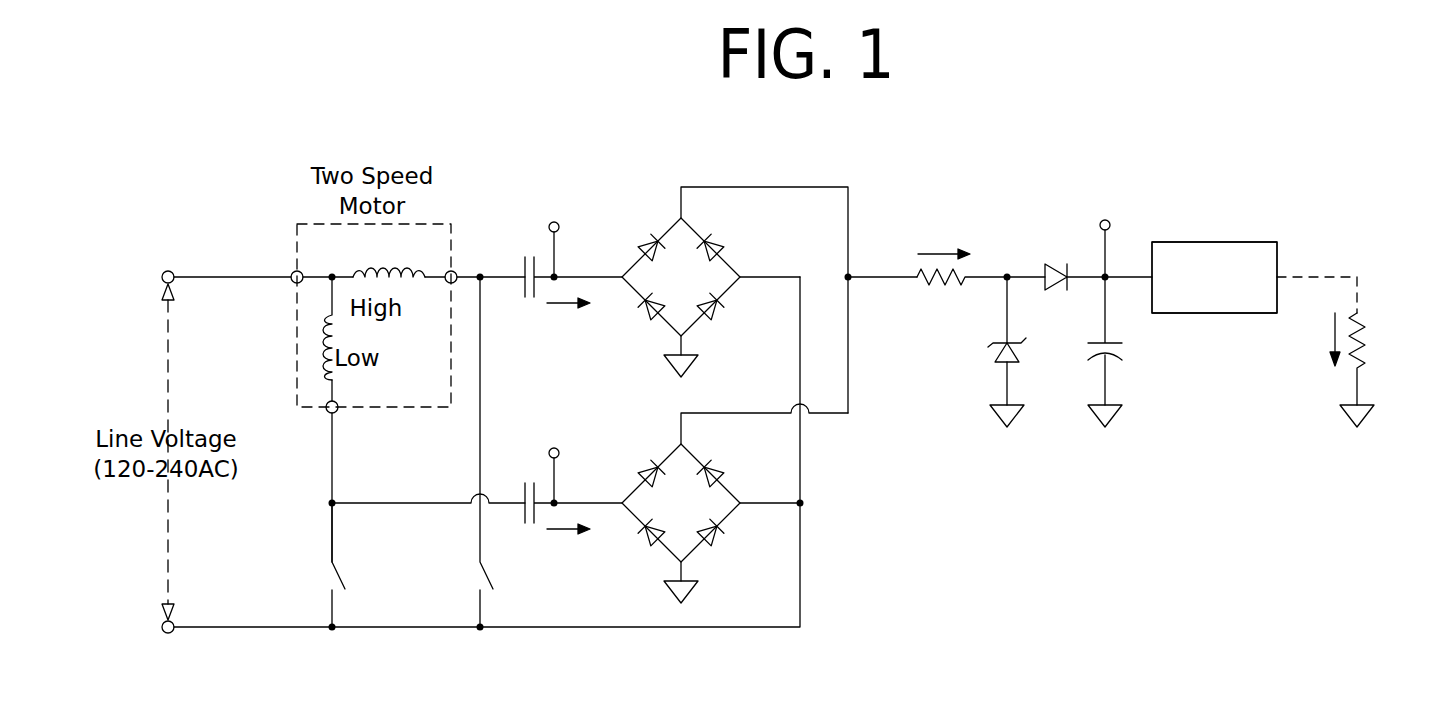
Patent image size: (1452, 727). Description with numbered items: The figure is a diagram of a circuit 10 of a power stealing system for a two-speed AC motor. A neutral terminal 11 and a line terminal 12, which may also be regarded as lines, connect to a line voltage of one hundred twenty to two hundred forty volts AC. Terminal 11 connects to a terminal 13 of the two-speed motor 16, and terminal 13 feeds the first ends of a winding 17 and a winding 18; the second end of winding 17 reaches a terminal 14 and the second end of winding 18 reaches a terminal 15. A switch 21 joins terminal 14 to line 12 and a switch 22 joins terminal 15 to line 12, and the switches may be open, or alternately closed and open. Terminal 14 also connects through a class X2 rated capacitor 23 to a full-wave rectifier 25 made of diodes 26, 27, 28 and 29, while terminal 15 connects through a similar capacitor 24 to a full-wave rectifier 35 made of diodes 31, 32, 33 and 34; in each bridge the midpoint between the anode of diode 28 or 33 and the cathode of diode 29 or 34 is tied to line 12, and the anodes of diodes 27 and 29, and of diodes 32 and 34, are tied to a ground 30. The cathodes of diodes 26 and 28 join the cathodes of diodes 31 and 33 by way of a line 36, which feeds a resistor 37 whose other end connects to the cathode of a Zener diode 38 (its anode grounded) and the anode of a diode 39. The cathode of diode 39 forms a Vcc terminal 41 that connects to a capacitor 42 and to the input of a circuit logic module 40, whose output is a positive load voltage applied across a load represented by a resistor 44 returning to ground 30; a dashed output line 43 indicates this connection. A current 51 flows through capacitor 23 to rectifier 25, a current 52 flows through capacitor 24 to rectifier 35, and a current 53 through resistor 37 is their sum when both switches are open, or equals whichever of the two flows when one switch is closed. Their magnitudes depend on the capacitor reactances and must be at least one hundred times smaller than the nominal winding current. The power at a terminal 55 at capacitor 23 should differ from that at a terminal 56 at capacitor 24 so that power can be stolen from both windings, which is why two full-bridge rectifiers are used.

The circuit 10 is at (1157, 184).
The neutral terminal 11 is at (161, 277).
The line terminal 12 is at (161, 627).
The motor terminal 13 is at (293, 284).
The motor terminal 14 is at (456, 270).
The motor terminal 15 is at (336, 413).
The two-speed motor 16 is at (296, 391).
The winding 17 is at (392, 268).
The winding 18 is at (323, 346).
The switch 21 is at (479, 584).
The switch 22 is at (331, 584).
The capacitor 23 is at (527, 300).
The capacitor 24 is at (527, 526).
The full-wave rectifier 25 is at (723, 300).
The diode 26 is at (652, 240).
The diode 27 is at (648, 314).
The diode 28 is at (720, 235).
The diode 29 is at (720, 310).
The ground 30 is at (690, 369).
The diode 31 is at (652, 466).
The diode 32 is at (648, 540).
The diode 33 is at (720, 461).
The diode 34 is at (720, 536).
The full-wave rectifier 35 is at (723, 492).
The line 36 is at (852, 340).
The resistor 37 is at (942, 288).
The Zener diode 38 is at (993, 357).
The diode 39 is at (1060, 292).
The circuit logic module 40 is at (1216, 242).
The Vcc terminal 41 is at (1100, 274).
The capacitor 42 is at (1128, 350).
The output line 43 is at (1338, 273).
The resistor 44 is at (1368, 324).
The current 51 is at (562, 305).
The current 52 is at (562, 531).
The current 53 is at (938, 250).
The terminal 55 is at (554, 221).
The terminal 56 is at (554, 447).